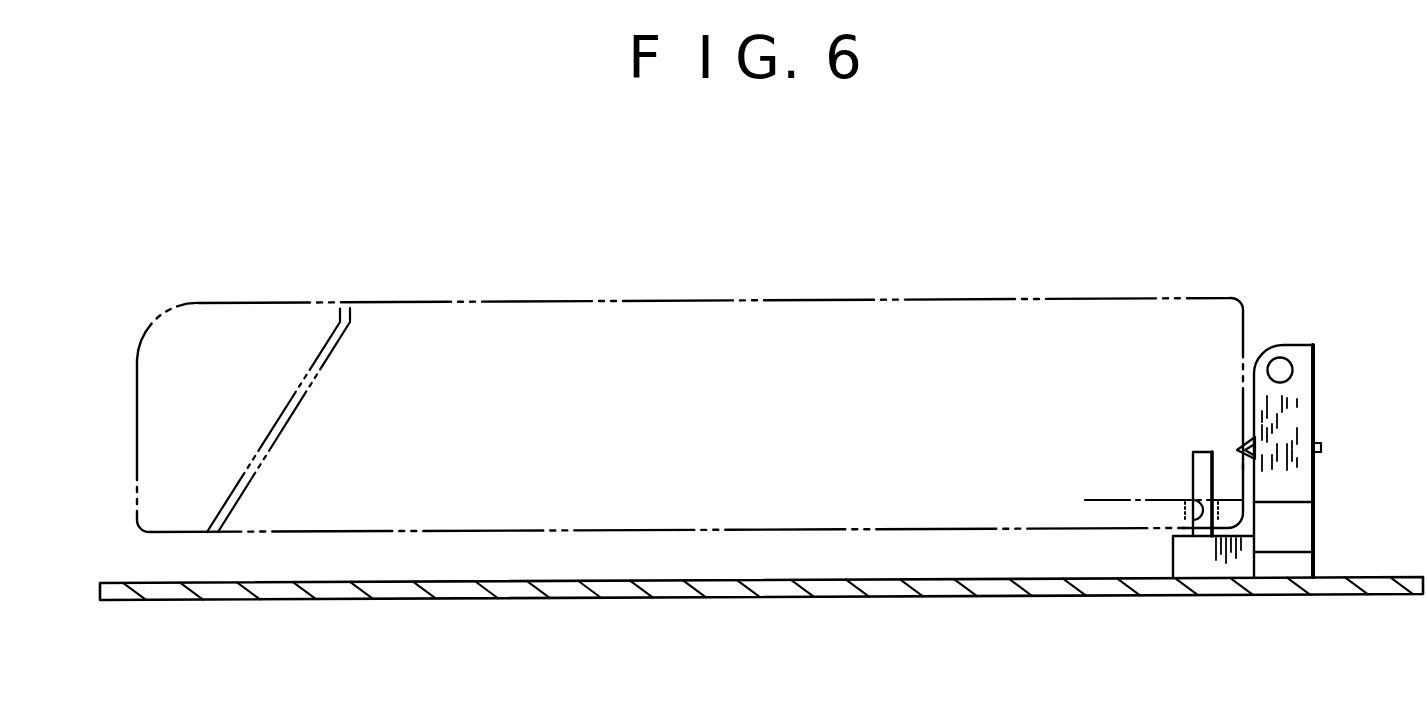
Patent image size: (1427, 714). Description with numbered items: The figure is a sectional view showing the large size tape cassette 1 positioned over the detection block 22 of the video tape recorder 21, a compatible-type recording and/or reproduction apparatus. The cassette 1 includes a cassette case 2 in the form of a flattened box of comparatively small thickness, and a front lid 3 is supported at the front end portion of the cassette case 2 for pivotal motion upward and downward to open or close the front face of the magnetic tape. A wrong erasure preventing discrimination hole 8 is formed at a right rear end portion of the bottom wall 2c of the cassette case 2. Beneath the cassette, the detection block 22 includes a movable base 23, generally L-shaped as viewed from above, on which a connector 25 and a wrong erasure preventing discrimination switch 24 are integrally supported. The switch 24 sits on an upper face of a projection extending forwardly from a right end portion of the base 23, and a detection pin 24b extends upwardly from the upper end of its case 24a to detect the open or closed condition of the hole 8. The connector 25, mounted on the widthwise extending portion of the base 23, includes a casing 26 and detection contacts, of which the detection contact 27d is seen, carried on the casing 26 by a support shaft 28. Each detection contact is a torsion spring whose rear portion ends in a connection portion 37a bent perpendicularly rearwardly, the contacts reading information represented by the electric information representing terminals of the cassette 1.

The large size tape cassette 1 is at (942, 298).
The cassette case 2 is at (760, 298).
The bottom wall 2c is at (1095, 500).
The front lid 3 is at (180, 305).
The wrong erasure preventing discrimination hole 8 is at (1192, 500).
The video tape recorder 21 is at (140, 583).
The detection block 22 is at (1313, 358).
The movable base 23 is at (1307, 530).
The wrong erasure preventing discrimination switch 24 is at (1168, 560).
The case 24a is at (1207, 560).
The detection pin 24b is at (1203, 452).
The connector 25 is at (1315, 385).
The casing 26 is at (1303, 410).
The detection contact 27d is at (1237, 447).
The support shaft 28 is at (1282, 366).
The connection portion 37a is at (1323, 450).